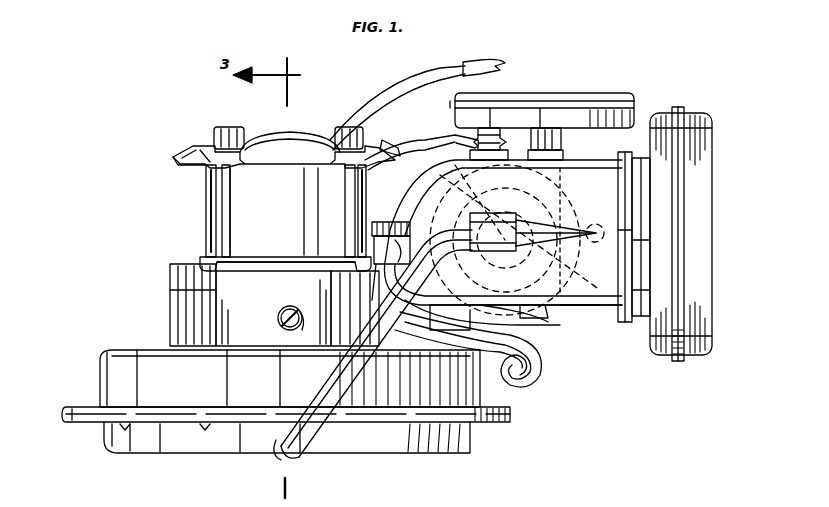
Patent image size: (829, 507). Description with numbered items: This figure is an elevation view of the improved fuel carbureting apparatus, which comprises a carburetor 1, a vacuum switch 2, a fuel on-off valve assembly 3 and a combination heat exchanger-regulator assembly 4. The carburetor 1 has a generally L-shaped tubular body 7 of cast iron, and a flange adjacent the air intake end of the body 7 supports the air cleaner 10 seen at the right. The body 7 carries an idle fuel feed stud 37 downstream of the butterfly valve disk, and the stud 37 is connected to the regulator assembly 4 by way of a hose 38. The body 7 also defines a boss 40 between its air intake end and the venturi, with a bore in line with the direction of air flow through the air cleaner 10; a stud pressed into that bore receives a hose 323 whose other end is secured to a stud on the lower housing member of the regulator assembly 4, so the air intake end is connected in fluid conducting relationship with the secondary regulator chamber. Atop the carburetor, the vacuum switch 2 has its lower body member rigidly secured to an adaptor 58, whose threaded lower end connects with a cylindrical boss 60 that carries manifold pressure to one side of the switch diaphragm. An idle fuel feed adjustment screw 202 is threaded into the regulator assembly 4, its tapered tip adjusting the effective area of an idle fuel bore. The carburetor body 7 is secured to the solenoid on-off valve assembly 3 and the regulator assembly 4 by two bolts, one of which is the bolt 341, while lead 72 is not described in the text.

The carburetor 1 is at (577, 309).
The vacuum switch 2 is at (538, 86).
The fuel on-off valve assembly 3 is at (198, 196).
The combination heat exchanger-regulator assembly 4 is at (102, 341).
The tubular body 7 is at (598, 310).
The air cleaner 10 is at (690, 112).
The idle fuel feed stud 37 is at (540, 325).
The hose 38 is at (540, 386).
The boss 40 is at (500, 230).
The adaptor 58 is at (565, 133).
The cylindrical boss 60 is at (565, 150).
The lead wire 72 is at (444, 130).
The idle fuel feed adjustment screw 202 is at (280, 308).
The hose 323 is at (284, 442).
The bolt 341 is at (388, 222).